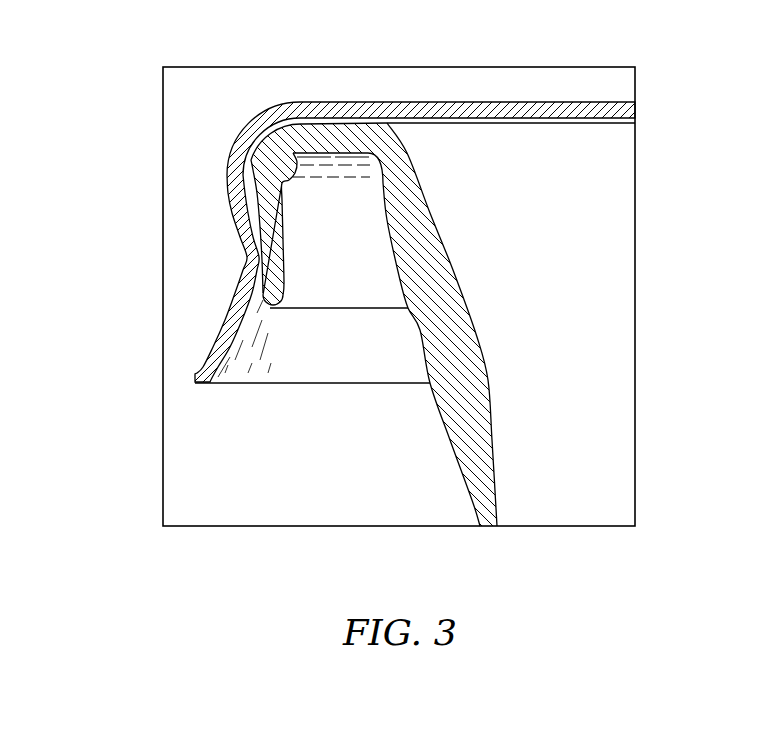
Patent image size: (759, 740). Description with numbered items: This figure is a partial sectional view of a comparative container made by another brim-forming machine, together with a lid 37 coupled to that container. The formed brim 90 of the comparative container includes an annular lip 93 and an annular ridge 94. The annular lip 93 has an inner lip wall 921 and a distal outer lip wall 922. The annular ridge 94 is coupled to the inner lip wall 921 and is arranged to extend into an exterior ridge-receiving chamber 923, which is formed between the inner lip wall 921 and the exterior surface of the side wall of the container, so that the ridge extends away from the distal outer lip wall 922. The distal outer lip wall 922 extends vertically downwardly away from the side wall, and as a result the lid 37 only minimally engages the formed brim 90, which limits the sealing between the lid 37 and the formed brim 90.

The lid 37 is at (237, 150).
The formed brim 90 is at (270, 309).
The annular lip 93 is at (302, 233).
The annular ridge 94 is at (295, 177).
The inner lip wall 921 is at (332, 145).
The distal outer lip wall 922 is at (280, 290).
The exterior ridge-receiving chamber 923 is at (371, 283).